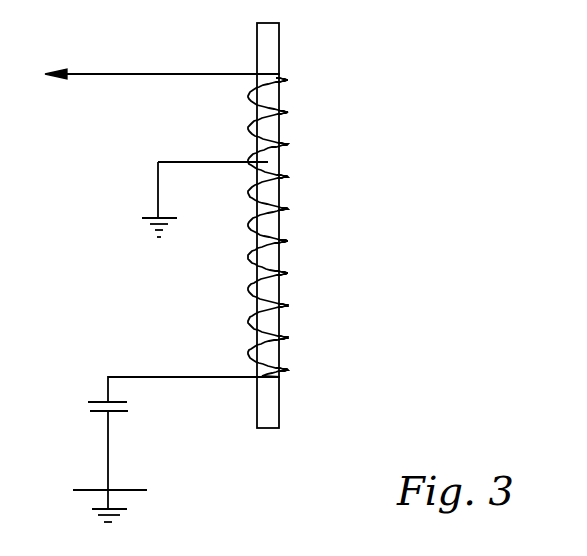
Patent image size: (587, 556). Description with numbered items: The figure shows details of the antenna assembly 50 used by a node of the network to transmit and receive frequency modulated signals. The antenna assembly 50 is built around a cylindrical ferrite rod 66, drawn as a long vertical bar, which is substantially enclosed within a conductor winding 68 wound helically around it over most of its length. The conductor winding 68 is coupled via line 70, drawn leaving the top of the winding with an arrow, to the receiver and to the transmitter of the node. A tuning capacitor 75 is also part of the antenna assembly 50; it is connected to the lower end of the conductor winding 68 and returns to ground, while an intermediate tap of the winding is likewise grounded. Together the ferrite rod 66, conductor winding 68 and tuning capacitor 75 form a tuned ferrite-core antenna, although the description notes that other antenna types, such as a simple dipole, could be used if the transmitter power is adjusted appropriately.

The antenna assembly 50 is at (366, 329).
The cylindrical ferrite rod 66 is at (281, 255).
The conductor winding 68 is at (285, 138).
The line 70 is at (148, 76).
The tuning capacitor 75 is at (88, 403).